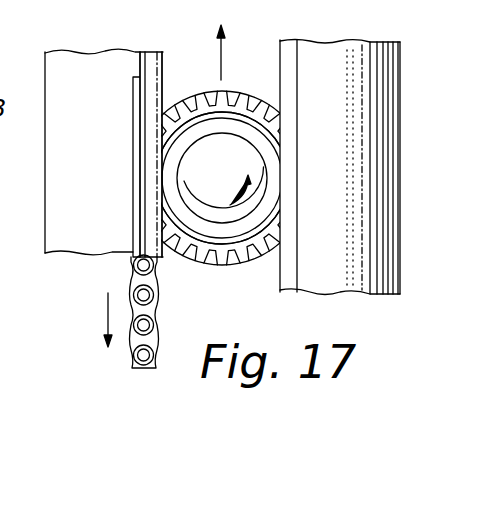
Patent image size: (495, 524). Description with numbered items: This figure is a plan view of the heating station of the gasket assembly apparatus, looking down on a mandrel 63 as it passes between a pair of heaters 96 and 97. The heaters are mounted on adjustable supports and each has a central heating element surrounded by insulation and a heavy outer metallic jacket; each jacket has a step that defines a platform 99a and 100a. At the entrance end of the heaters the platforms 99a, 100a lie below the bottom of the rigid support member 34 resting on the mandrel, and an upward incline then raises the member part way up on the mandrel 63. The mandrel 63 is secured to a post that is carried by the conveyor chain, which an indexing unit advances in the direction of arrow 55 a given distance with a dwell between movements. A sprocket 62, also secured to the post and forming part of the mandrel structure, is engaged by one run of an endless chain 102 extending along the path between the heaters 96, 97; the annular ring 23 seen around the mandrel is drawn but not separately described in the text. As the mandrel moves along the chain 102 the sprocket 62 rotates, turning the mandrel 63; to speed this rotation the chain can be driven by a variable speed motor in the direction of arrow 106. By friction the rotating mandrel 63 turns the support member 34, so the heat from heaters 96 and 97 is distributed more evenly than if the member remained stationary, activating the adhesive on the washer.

The heater 97 is at (52, 68).
The platform 100a is at (153, 63).
The endless chain 102 is at (132, 273).
The arrow 106 is at (108, 310).
The sprocket 62 is at (225, 265).
The hub ring 23 is at (263, 148).
The support member 34 is at (284, 205).
The mandrel 63 is at (221, 167).
The arrow 55 is at (222, 65).
The platform 99a is at (290, 45).
The heater 96 is at (377, 185).